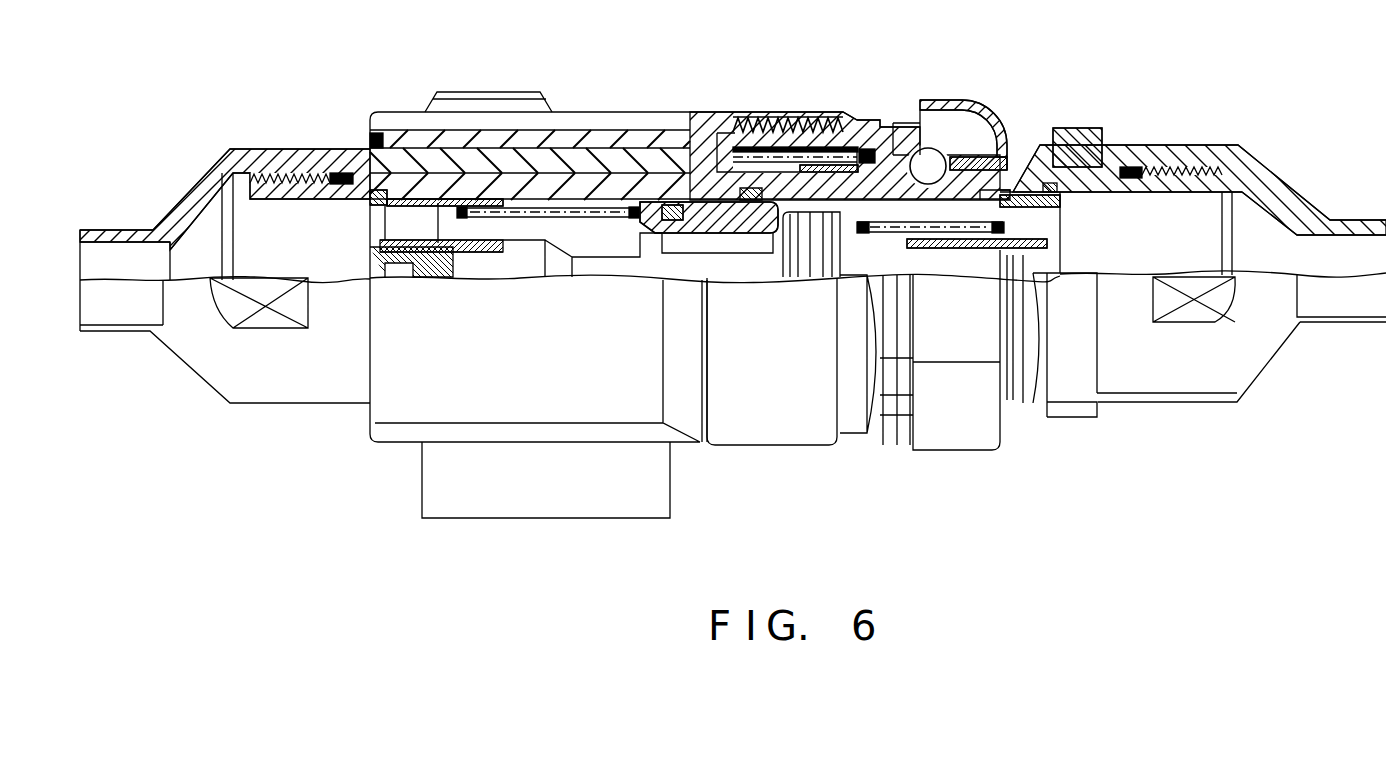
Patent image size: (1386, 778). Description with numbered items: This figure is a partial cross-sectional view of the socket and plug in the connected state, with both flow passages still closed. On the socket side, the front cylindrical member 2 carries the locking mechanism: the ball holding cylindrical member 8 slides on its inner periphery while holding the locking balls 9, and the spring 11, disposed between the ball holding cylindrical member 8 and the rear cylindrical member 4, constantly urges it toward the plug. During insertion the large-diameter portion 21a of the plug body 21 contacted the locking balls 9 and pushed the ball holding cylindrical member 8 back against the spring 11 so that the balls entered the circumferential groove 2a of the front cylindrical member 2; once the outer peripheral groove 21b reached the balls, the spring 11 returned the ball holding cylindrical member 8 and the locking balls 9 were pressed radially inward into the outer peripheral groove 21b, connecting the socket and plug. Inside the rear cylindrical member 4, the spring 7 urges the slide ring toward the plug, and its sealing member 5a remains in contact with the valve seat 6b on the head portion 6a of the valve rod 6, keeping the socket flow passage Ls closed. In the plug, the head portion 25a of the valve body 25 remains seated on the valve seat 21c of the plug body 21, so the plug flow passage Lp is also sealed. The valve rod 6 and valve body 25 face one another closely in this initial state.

The front cylindrical member 2 is at (866, 113).
The circumferential groove 2a is at (920, 140).
The rear cylindrical member 4 is at (398, 186).
The sealing member 5a is at (710, 263).
The valve rod 6 is at (598, 275).
The head portion 6a is at (787, 263).
The valve seat 6b is at (775, 260).
The spring 7 is at (600, 210).
The ball holding cylindrical member 8 is at (846, 118).
The locking balls 9 is at (960, 150).
The spring 11 is at (752, 156).
The plug body 21 is at (970, 187).
The large-diameter portion 21a is at (890, 140).
The outer peripheral groove 21b is at (937, 187).
The valve seat 21c is at (793, 133).
The valve body 25 is at (903, 263).
The head portion 25a is at (828, 270).
The flow passage LS is at (338, 258).
The flow passage LP is at (1128, 258).